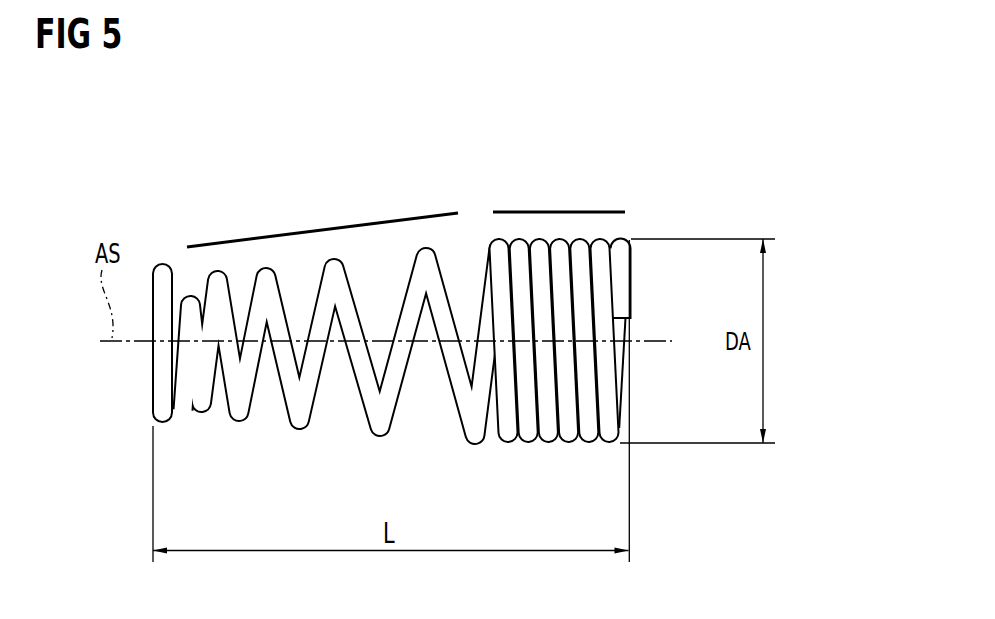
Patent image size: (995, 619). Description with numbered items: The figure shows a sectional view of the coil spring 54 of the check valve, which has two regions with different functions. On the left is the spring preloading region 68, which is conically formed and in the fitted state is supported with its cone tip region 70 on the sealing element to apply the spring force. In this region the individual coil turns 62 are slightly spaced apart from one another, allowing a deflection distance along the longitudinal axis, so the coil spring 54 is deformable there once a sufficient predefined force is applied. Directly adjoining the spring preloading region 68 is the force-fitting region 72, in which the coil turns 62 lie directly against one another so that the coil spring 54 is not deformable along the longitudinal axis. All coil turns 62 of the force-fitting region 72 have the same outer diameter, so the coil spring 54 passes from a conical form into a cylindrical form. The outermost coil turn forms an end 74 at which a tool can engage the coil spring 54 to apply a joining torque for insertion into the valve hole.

The coil spring 54 is at (435, 286).
The coil turns 62 is at (373, 410).
The spring preloading region 68 is at (322, 210).
The cone tip region 70 is at (170, 234).
The force-fitting region 72 is at (566, 193).
The end 74 is at (618, 287).